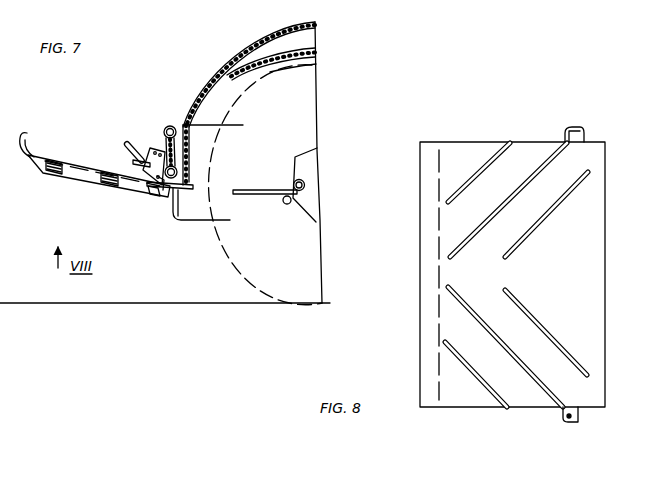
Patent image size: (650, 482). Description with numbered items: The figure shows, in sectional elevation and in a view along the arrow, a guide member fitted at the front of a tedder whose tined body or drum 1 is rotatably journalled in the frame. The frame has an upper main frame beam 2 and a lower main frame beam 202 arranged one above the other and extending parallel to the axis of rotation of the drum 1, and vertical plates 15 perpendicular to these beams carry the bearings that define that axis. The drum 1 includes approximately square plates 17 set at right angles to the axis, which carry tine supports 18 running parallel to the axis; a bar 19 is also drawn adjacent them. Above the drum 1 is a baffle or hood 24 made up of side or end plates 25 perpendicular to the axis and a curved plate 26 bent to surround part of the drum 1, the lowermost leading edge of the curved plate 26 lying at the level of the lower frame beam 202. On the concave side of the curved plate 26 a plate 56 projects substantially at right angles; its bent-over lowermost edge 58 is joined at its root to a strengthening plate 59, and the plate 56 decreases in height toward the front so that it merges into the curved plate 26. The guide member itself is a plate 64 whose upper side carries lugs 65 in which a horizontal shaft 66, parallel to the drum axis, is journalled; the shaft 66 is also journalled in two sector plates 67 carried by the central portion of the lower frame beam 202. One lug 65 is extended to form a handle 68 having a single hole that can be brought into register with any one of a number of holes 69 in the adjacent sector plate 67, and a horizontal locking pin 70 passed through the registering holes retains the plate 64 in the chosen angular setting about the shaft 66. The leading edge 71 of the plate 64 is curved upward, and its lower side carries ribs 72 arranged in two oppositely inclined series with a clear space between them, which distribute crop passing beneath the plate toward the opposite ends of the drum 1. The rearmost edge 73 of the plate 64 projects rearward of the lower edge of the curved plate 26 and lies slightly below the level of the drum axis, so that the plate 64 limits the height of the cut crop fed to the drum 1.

In FIG. 7, the tined body or drum 1 is at (258, 268).
In FIG. 7, the upper main frame beam 2 is at (181, 120).
In FIG. 8, the upper main frame beam 2 is at (573, 129).
In FIG. 7, the vertical plate 15 is at (213, 222).
In FIG. 7, the square plate 17 is at (320, 207).
In FIG. 7, the tine support 18 is at (299, 178).
In FIG. 7, the bar 19 is at (268, 191).
In FIG. 7, the baffle or hood 24 is at (232, 62).
In FIG. 7, the side or end plate 25 is at (320, 66).
In FIG. 7, the curved plate 26 is at (284, 38).
In FIG. 7, the plate 56 is at (320, 34).
In FIG. 7, the lowermost edge 58 is at (320, 59).
In FIG. 7, the strengthening plate 59 is at (320, 52).
In FIG. 7, the plate 64 is at (67, 146).
In FIG. 8, the plate 64 is at (476, 118).
In FIG. 7, the lug 65 is at (148, 191).
In FIG. 7, the horizontal shaft 66 is at (158, 192).
In FIG. 7, the sector plate 67 is at (152, 148).
In FIG. 7, the handle 68 is at (125, 143).
In FIG. 7, the hole 69 is at (164, 132).
In FIG. 7, the horizontal locking pin 70 is at (133, 162).
In FIG. 7, the leading edge 71 is at (25, 136).
In FIG. 8, the leading edge 71 is at (420, 310).
In FIG. 7, the rib 72 is at (68, 183).
In FIG. 8, the rib 72 is at (472, 181).
In FIG. 7, the rearmost edge 73 is at (197, 187).
In FIG. 8, the rearmost edge 73 is at (597, 408).
In FIG. 7, the lower main frame beam 202 is at (187, 176).